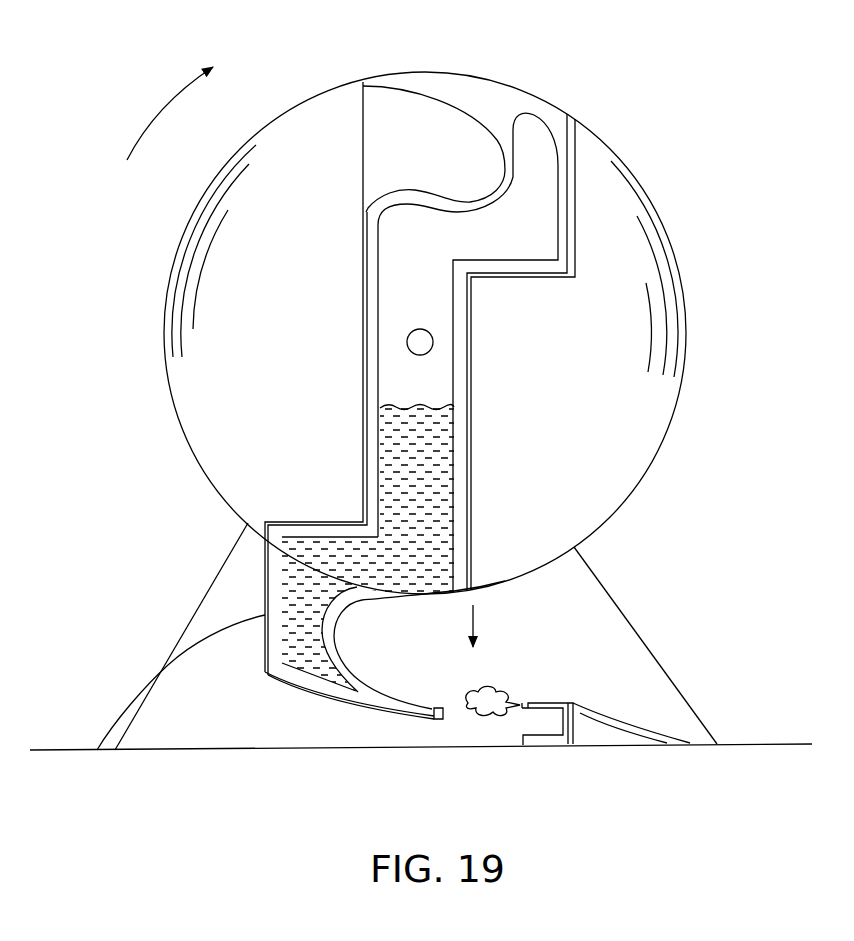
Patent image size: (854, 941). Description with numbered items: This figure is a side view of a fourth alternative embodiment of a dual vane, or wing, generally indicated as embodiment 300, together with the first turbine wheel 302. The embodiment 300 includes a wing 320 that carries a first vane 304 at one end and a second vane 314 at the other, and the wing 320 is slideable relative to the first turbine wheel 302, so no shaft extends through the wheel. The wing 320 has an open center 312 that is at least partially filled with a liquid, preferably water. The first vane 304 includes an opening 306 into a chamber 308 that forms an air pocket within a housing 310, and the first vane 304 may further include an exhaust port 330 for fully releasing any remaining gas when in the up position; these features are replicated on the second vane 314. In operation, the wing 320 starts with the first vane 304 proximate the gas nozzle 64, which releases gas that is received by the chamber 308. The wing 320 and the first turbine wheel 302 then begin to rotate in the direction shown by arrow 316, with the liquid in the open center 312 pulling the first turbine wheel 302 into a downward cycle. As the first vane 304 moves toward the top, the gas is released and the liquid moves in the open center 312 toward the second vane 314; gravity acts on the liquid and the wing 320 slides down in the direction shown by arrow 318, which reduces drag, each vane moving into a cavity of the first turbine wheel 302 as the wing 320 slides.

The dual vane embodiment 300 is at (680, 223).
The first turbine wheel 302 is at (570, 392).
The first vane 304 is at (357, 703).
The opening 306 is at (470, 665).
The chamber 308 is at (428, 668).
The housing 310 is at (98, 745).
The open center 312 is at (437, 548).
The second vane 314 is at (502, 84).
The rotation direction arrow 316 is at (167, 109).
The sliding direction arrow 318 is at (477, 617).
The wing 320 is at (263, 687).
The exhaust port 330 is at (440, 719).
The gas nozzle 64 is at (568, 702).